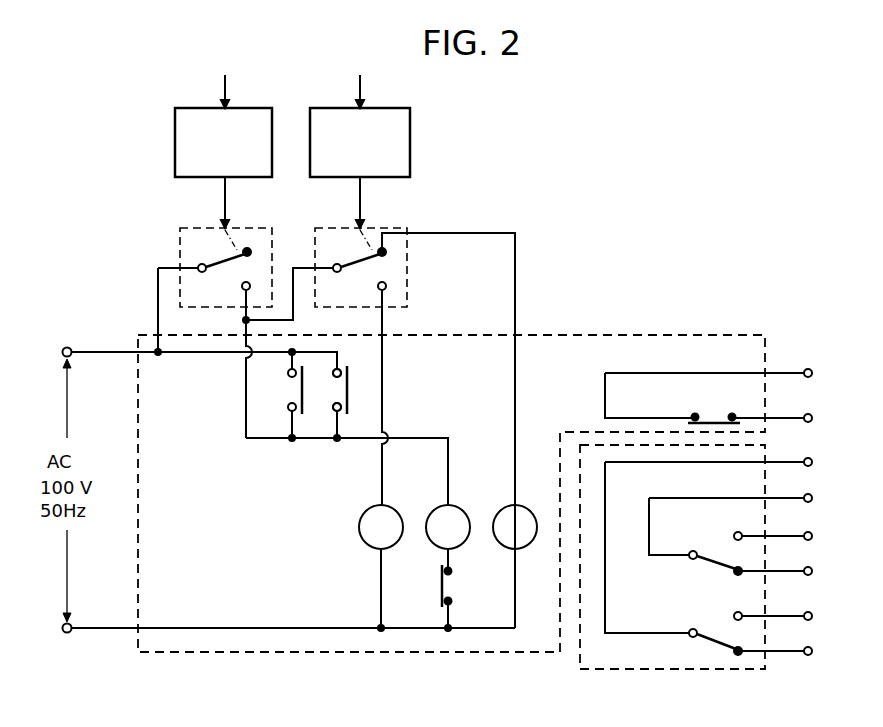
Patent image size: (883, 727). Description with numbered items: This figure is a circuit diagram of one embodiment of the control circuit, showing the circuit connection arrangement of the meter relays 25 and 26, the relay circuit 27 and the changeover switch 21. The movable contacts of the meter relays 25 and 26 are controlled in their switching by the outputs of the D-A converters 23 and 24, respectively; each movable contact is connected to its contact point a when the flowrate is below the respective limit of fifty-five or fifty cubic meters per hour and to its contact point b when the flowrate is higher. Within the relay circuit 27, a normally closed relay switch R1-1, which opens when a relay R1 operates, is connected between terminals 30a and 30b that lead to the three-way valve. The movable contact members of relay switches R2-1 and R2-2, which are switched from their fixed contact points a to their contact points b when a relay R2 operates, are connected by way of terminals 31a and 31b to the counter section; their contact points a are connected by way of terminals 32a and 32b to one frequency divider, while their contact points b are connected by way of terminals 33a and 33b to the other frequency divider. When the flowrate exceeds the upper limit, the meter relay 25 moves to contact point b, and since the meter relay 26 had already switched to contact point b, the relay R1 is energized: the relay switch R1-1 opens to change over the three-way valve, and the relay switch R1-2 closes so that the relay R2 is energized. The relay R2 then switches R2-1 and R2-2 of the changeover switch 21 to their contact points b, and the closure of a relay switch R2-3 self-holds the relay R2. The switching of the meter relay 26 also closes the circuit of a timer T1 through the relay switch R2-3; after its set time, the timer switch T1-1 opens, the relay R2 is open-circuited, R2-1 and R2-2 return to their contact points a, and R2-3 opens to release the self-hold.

The changeover switch 21 is at (706, 670).
The D-A converter 23 is at (175, 150).
The D-A converter 24 is at (411, 152).
The meter relay 25 is at (180, 243).
The meter relay 26 is at (385, 229).
The relay circuit 27 is at (630, 333).
The terminal 30a is at (729, 373).
The terminal 30b is at (729, 401).
The terminal 31a is at (729, 542).
The terminal 31b is at (751, 521).
The terminal 32a is at (787, 577).
The terminal 32b is at (787, 657).
The terminal 33a is at (793, 529).
The terminal 33b is at (793, 609).
The relay R1 is at (368, 512).
The relay R2 is at (432, 512).
The timer T1 is at (500, 512).
The normally closed relay switch R1-1 is at (714, 407).
The relay switch R1-2 is at (288, 392).
The relay switch R2-1 is at (712, 563).
The relay switch R2-2 is at (719, 632).
The relay switch R2-3 is at (353, 390).
The timer switch T1-1 is at (438, 583).